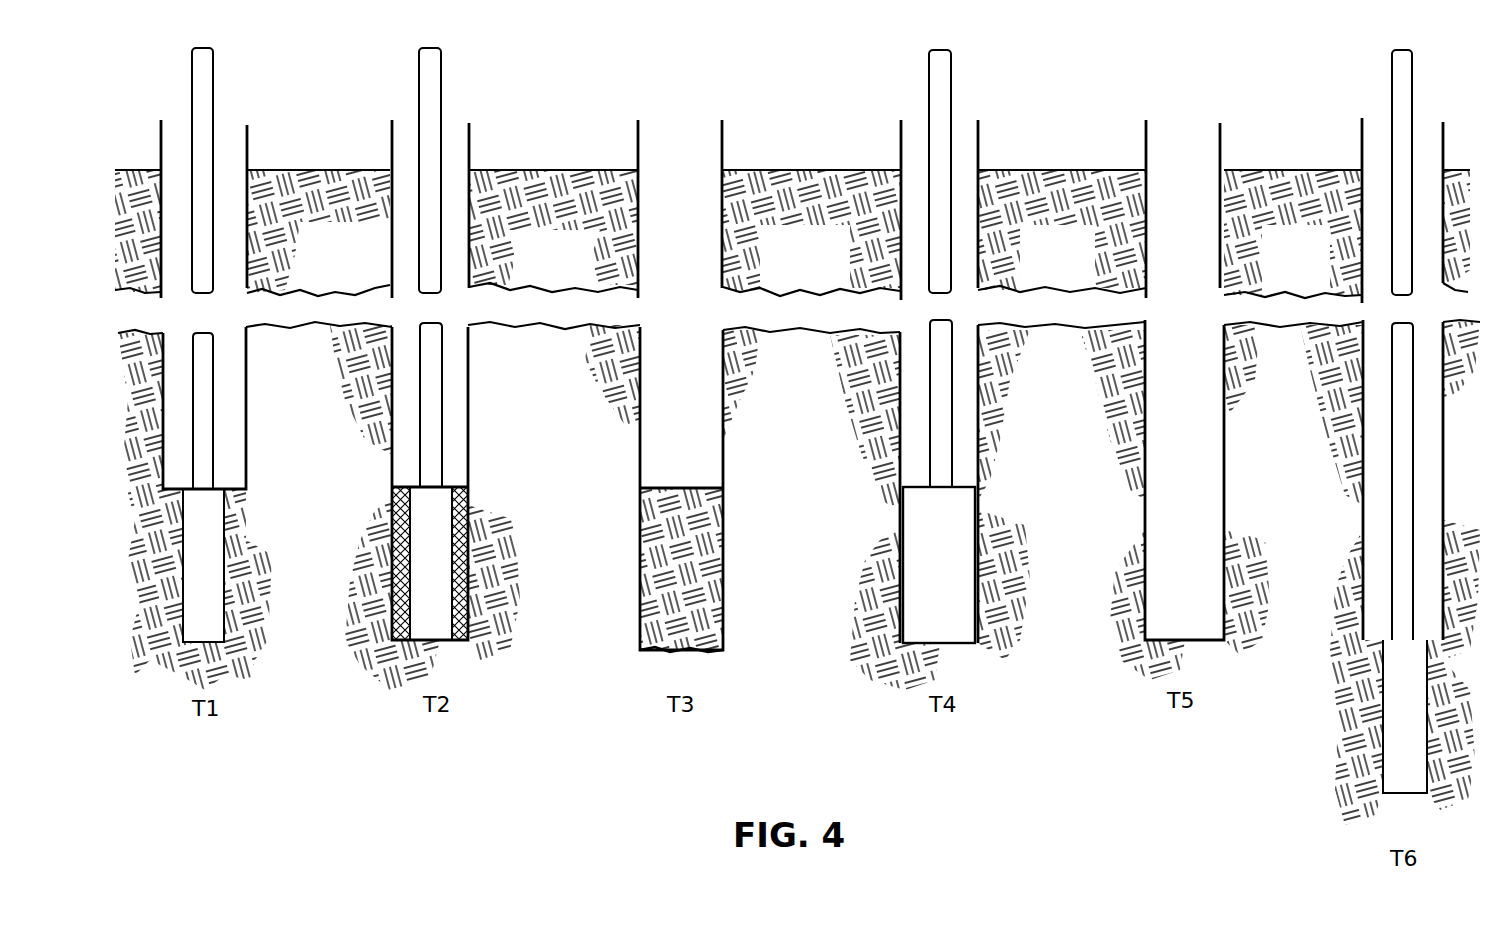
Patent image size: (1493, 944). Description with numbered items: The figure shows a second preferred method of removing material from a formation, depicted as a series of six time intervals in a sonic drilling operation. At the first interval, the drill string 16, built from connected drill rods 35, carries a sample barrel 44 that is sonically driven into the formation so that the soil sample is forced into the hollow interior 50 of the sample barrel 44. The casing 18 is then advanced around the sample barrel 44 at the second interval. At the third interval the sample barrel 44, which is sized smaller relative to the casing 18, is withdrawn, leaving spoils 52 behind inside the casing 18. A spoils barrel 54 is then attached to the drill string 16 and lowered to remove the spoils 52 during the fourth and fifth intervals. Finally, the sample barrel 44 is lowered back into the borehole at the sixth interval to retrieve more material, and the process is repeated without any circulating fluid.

The drill string 16 is at (205, 90).
The casing 18 is at (248, 450).
The drill rod 35 is at (942, 420).
The sample barrel 44 is at (208, 512).
The hollow interior 50 is at (208, 540).
The spoils 52 is at (688, 565).
The spoils barrel 54 is at (953, 568).